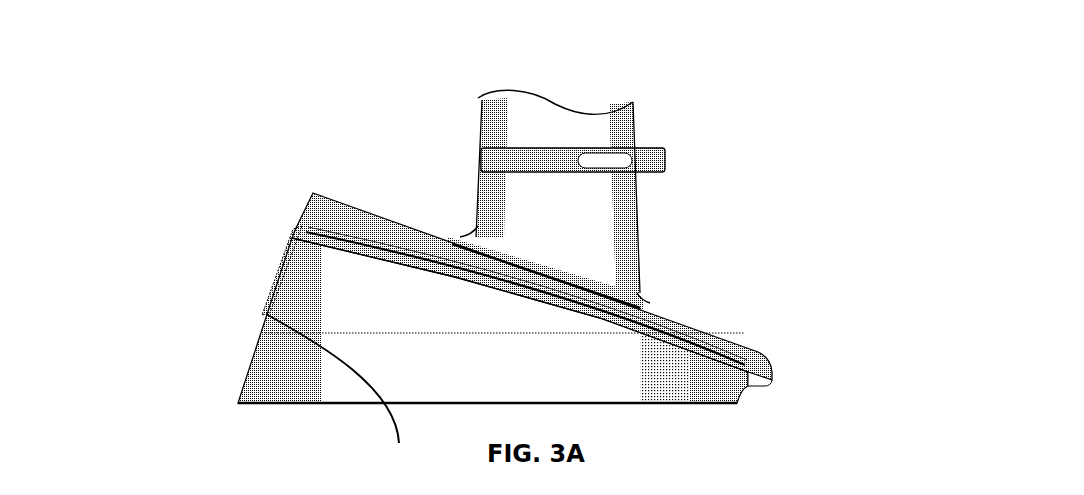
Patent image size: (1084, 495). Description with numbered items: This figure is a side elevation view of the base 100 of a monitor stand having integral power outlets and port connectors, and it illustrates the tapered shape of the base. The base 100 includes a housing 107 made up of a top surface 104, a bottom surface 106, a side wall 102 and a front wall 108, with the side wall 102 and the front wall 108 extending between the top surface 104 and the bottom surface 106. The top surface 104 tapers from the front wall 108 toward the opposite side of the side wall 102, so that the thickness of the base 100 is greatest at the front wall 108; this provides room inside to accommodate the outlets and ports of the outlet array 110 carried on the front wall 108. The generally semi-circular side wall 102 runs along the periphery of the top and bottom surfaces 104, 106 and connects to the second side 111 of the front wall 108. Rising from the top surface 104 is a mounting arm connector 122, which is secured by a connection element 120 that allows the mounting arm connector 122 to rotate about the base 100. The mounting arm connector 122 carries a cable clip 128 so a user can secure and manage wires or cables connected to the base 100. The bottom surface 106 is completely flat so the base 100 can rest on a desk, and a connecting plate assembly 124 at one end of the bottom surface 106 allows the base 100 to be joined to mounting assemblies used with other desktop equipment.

The base 100 is at (270, 126).
The side wall 102 is at (303, 358).
The top surface 104 is at (412, 230).
The bottom surface 106 is at (316, 403).
The housing 107 is at (213, 297).
The front wall 108 is at (260, 347).
The outlet array 110 is at (277, 267).
The second side 111 is at (344, 399).
The connection element 120 is at (643, 303).
The mounting arm connector 122 is at (613, 133).
The connecting plate assembly 124 is at (752, 379).
The cable clip 128 is at (662, 173).